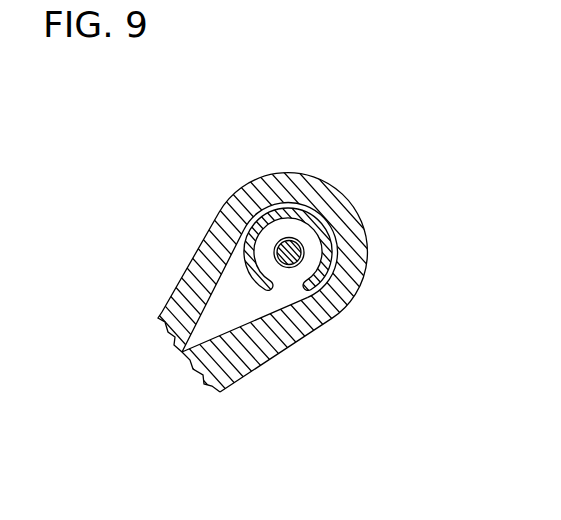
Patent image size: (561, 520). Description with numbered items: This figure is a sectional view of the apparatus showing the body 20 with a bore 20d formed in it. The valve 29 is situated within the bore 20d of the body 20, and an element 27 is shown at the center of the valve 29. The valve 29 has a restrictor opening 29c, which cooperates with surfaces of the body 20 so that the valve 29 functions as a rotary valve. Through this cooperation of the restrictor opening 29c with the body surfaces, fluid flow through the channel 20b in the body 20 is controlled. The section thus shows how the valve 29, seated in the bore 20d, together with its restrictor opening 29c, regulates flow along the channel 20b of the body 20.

The body 20 is at (312, 163).
The channel 20b is at (220, 320).
The bore 20d is at (323, 212).
The pin 27 is at (275, 248).
The valve 29 is at (348, 241).
The restrictor opening 29c is at (290, 293).